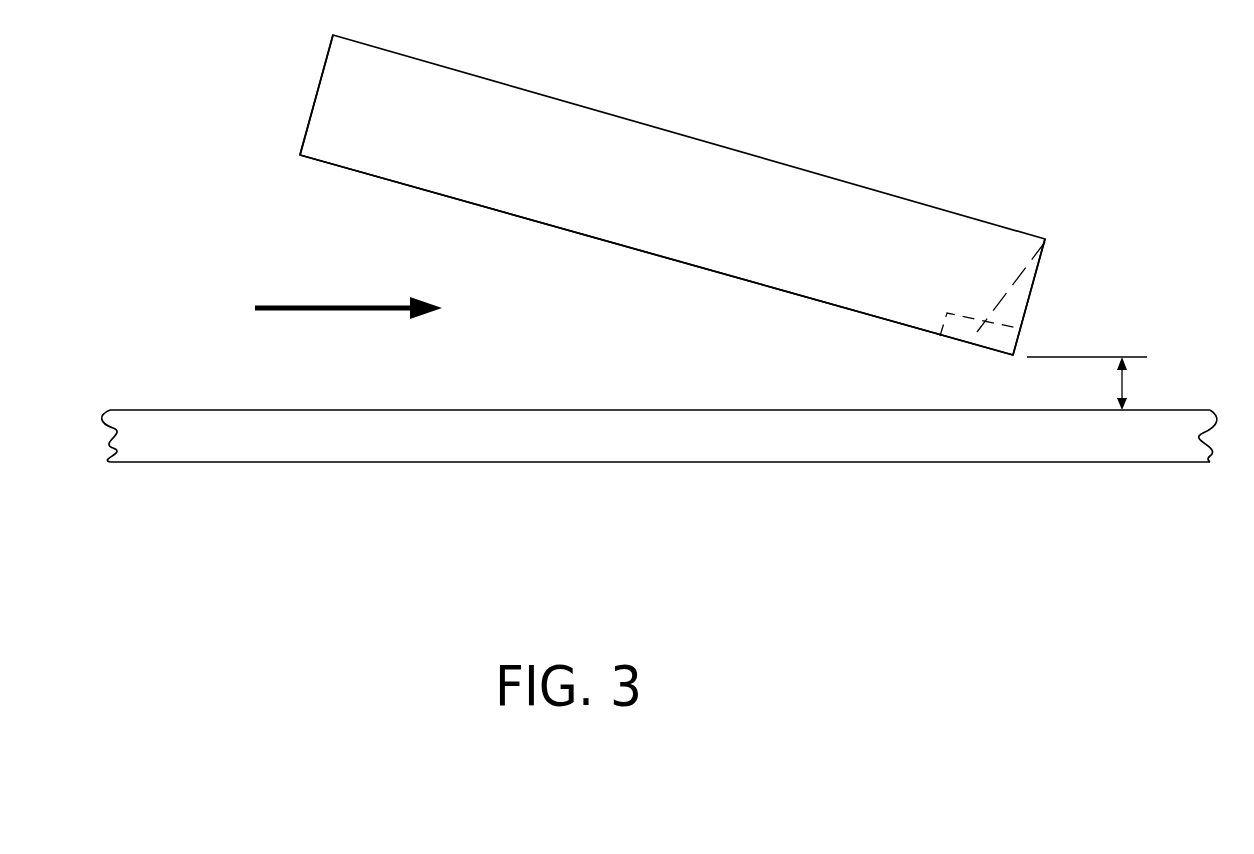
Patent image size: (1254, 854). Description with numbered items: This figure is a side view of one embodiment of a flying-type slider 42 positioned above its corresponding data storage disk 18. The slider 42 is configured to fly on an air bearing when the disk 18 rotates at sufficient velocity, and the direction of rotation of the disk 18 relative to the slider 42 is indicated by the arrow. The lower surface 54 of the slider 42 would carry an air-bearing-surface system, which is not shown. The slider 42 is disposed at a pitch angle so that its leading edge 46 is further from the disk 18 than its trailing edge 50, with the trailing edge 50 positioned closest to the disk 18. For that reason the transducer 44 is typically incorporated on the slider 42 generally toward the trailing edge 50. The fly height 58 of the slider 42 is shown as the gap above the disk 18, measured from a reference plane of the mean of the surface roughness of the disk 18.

The data storage disk 18 is at (187, 409).
The slider 42 is at (695, 208).
The transducer 44 is at (1047, 238).
The leading edge 46 is at (300, 155).
The trailing edge 50 is at (1013, 357).
The lower surface 54 is at (588, 238).
The fly height 58 is at (1125, 380).